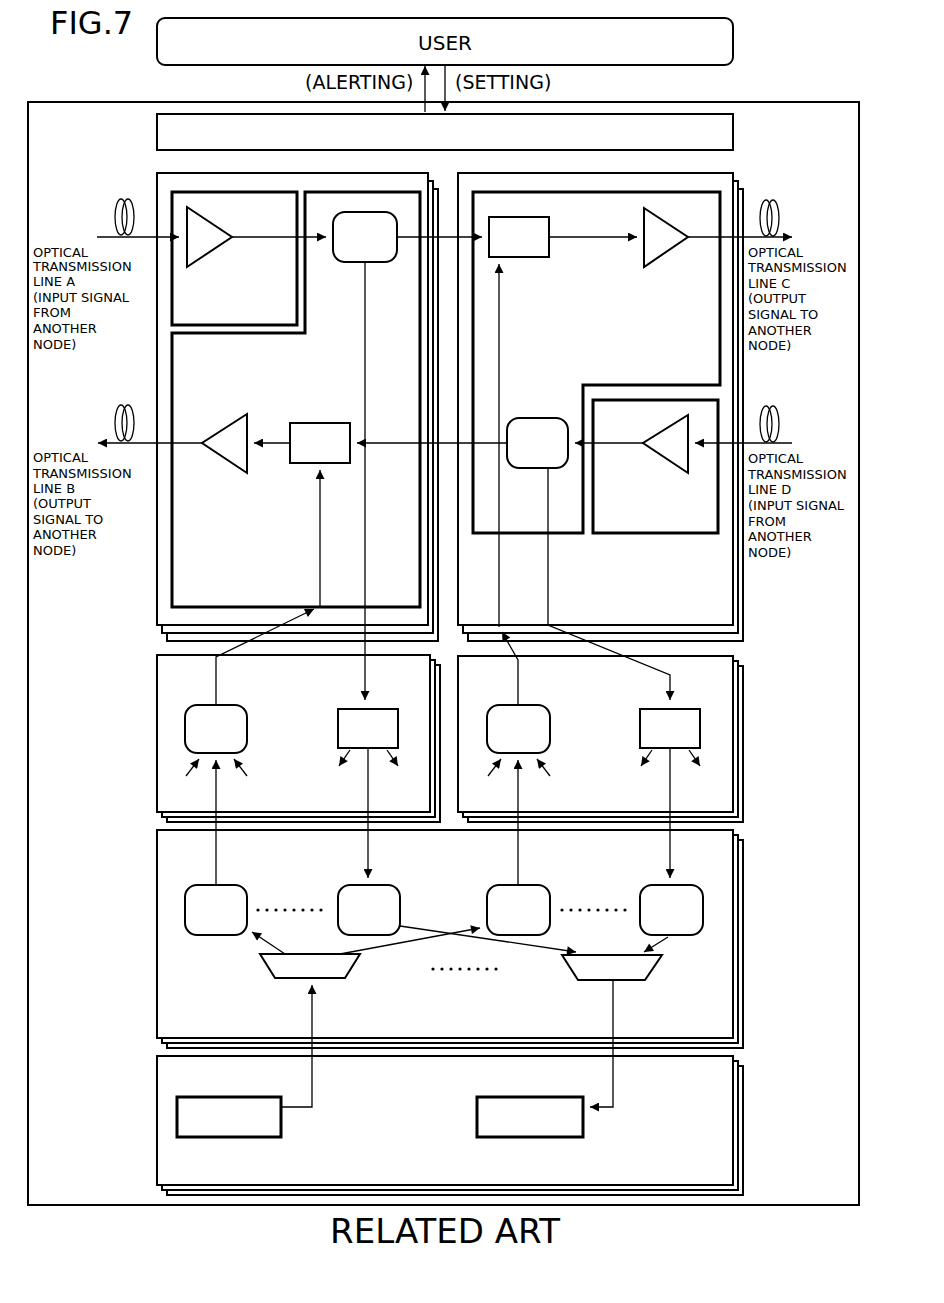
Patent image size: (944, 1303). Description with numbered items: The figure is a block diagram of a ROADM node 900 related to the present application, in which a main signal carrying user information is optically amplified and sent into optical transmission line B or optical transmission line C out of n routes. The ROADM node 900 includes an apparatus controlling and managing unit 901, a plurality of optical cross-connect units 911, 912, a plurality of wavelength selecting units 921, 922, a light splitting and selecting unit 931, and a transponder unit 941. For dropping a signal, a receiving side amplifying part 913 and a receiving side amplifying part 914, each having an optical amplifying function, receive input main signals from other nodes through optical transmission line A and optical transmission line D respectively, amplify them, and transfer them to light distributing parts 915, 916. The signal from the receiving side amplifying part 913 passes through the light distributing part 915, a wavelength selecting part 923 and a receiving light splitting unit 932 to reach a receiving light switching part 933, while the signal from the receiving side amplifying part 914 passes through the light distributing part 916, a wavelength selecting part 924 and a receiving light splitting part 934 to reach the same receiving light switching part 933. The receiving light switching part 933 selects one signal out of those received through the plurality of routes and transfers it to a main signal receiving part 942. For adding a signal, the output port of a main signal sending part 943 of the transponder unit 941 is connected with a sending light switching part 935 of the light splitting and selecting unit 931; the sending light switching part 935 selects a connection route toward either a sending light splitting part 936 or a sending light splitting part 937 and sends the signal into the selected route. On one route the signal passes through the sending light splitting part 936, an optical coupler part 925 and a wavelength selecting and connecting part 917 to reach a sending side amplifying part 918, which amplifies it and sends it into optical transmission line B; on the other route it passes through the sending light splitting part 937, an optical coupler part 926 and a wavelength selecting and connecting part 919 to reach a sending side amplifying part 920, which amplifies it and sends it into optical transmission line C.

The ROADM node 900 is at (130, 96).
The apparatus controlling and managing unit 901 is at (734, 128).
The optical cross-connect unit 911 is at (157, 181).
The optical cross-connect unit 912 is at (735, 180).
The receiving side amplifying part 913 is at (238, 221).
The receiving side amplifying part 914 is at (652, 432).
The light distributing part 915 is at (362, 264).
The light distributing part 916 is at (534, 468).
The wavelength selecting and connecting part 917 is at (322, 423).
The sending side amplifying part 918 is at (246, 420).
The wavelength selecting and connecting part 919 is at (502, 217).
The sending side amplifying part 920 is at (668, 254).
The wavelength selecting unit 921 is at (157, 681).
The wavelength selecting unit 922 is at (735, 680).
The wavelength selecting part 923 is at (378, 707).
The wavelength selecting part 924 is at (704, 697).
The optical coupler part 925 is at (248, 737).
The optical coupler part 926 is at (551, 737).
The light splitting and selecting unit 931 is at (157, 853).
The receiving light splitting unit 932 is at (338, 925).
The receiving light switching part 933 is at (650, 974).
The receiving light splitting part 934 is at (640, 925).
The sending light switching part 935 is at (269, 970).
The sending light splitting part 936 is at (248, 906).
The sending light splitting part 937 is at (551, 906).
The transponder unit 941 is at (157, 1073).
The main signal receiving part 942 is at (511, 1138).
The main signal sending part 943 is at (226, 1096).